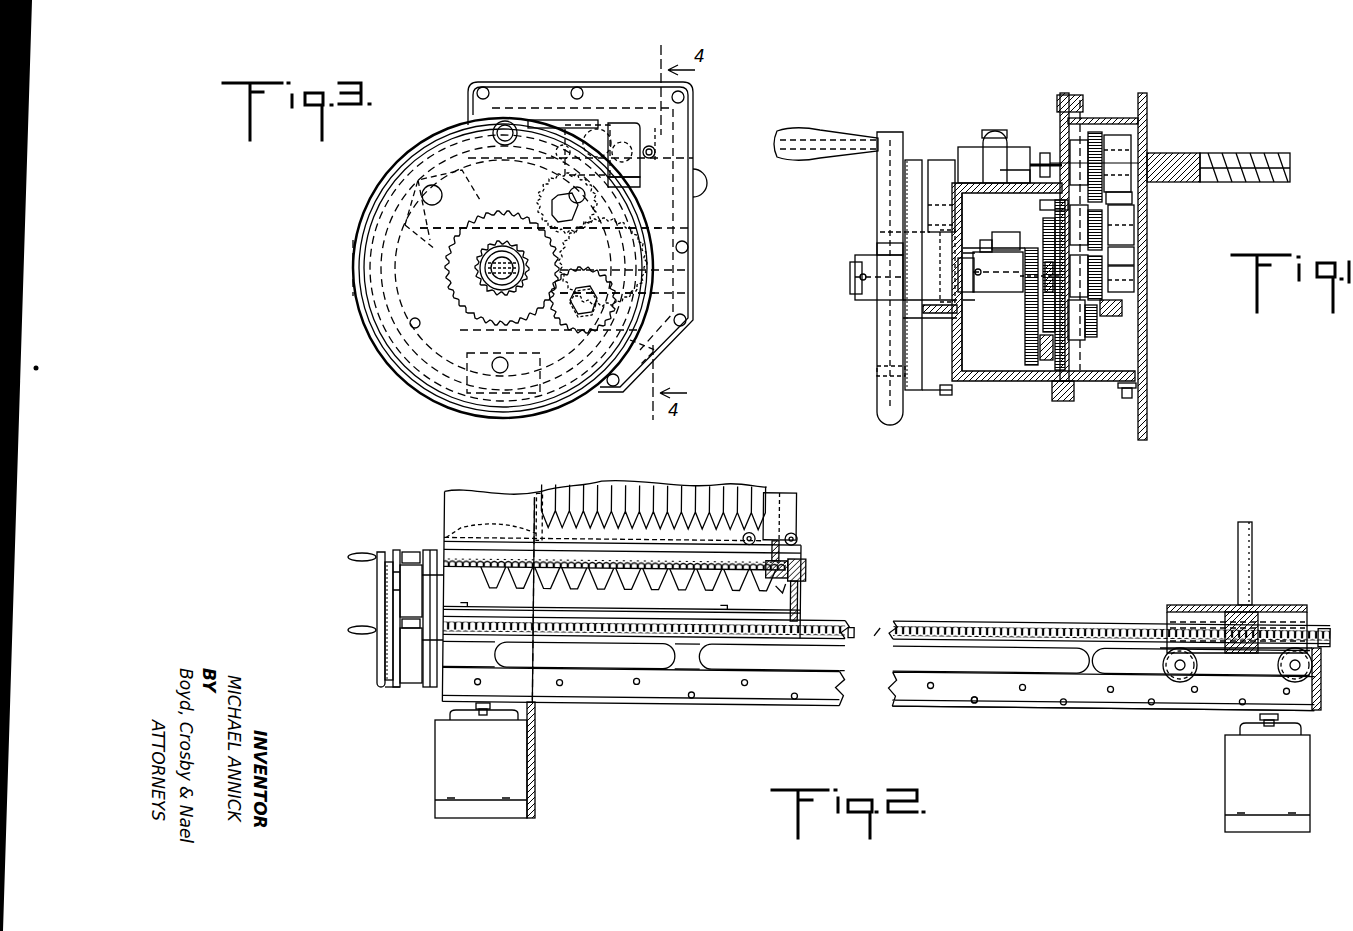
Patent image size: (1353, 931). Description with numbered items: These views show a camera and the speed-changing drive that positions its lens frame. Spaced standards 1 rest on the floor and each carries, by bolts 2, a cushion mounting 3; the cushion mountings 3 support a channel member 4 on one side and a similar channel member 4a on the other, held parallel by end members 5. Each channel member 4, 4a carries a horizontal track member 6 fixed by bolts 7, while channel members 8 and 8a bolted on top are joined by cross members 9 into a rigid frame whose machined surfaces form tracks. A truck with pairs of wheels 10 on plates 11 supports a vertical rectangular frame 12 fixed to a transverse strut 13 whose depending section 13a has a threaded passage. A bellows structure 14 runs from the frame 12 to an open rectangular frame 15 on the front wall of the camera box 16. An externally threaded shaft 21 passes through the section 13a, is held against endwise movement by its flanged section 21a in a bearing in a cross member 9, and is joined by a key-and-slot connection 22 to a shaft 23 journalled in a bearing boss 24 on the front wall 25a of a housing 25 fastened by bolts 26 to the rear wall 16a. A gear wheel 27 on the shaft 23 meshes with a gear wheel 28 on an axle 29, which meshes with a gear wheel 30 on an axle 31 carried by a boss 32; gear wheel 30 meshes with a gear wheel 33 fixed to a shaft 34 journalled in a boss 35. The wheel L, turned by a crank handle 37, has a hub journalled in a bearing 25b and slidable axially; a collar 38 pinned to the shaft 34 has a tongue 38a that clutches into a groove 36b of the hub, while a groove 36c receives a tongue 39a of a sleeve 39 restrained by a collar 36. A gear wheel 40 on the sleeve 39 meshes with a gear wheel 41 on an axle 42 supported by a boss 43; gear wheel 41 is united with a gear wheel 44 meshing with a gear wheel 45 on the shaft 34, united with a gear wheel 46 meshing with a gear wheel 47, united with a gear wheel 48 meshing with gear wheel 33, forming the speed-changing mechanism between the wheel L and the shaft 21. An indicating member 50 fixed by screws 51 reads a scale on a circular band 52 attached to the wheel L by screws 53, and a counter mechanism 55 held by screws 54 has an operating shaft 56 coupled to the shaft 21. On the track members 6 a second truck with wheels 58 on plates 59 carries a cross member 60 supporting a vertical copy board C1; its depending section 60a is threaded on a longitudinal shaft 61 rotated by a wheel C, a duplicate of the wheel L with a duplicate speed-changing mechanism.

In FIG. 2, the standards 1 is at (438, 775).
In FIG. 2, the bolts 2 is at (440, 716).
In FIG. 2, the cushion mounting 3 is at (483, 718).
In FIG. 2, the channel member 4 is at (728, 653).
In FIG. 2, the channel member 4a is at (605, 704).
In FIG. 2, the end members 5 is at (1321, 700).
In FIG. 2, the horizontal track member 6 is at (1100, 706).
In FIG. 2, the bolts 7 is at (975, 695).
In FIG. 2, the channel member 8 is at (625, 546).
In FIG. 2, the channel member 8a is at (714, 538).
In FIG. 2, the cross members 9 is at (800, 604).
In FIG. 2, the wheels 10 is at (795, 543).
In FIG. 2, the plate 11 is at (792, 531).
In FIG. 2, the vertical rectangular frame 12 is at (778, 490).
In FIG. 2, the transverse strut 13 is at (796, 560).
In FIG. 2, the depending section 13a is at (777, 588).
In FIG. 2, the bellows structure 14 is at (700, 484).
In FIG. 2, the open rectangular frame 15 is at (541, 492).
In FIG. 2, the camera box 16 is at (505, 492).
In FIG. 4, the rear wall of camera box 16a is at (1147, 432).
In FIG. 4, the externally threaded shaft 21 is at (1235, 153).
In FIG. 2, the externally threaded shaft 21 is at (442, 565).
In FIG. 2, the flanged section 21a is at (808, 566).
In FIG. 4, the key-and-slot connection 22 is at (1157, 153).
In FIG. 3, the shaft 23 is at (658, 160).
In FIG. 4, the shaft 23 is at (1110, 135).
In FIG. 4, the bearing boss 24 is at (1136, 186).
In FIG. 4, the housing 25 is at (978, 384).
In FIG. 2, the housing 25 is at (392, 690).
In FIG. 4, the front wall of housing 25a is at (1136, 226).
In FIG. 4, the bearing 25b is at (950, 316).
In FIG. 4, the bolts 26 is at (1122, 398).
In FIG. 2, the bolts 26 is at (427, 690).
In FIG. 3, the gear wheel 27 is at (662, 128).
In FIG. 4, the gear wheel 27 is at (1080, 100).
In FIG. 3, the gear wheel 28 is at (608, 120).
In FIG. 3, the axle 29 is at (585, 120).
In FIG. 3, the gear wheel 30 is at (660, 228).
In FIG. 4, the gear wheel 30 is at (1134, 210).
In FIG. 3, the axle 31 is at (615, 180).
In FIG. 4, the axle 31 is at (1068, 228).
In FIG. 4, the boss 32 is at (1120, 246).
In FIG. 4, the gear wheel 33 is at (1124, 258).
In FIG. 3, the shaft 34 is at (496, 282).
In FIG. 4, the shaft 34 is at (850, 276).
In FIG. 3, the boss 35 is at (470, 178).
In FIG. 4, the boss 35 is at (1122, 278).
In FIG. 4, the collar 36 is at (935, 372).
In FIG. 4, the groove 36b is at (886, 235).
In FIG. 4, the groove 36c is at (972, 250).
In FIG. 3, the actuating crank handle 37 is at (498, 127).
In FIG. 4, the actuating crank handle 37 is at (806, 130).
In FIG. 3, the collar 38 is at (486, 262).
In FIG. 4, the collar 38 is at (852, 265).
In FIG. 4, the tongue 38a is at (878, 250).
In FIG. 3, the sleeve 39 is at (298, 116).
In FIG. 4, the sleeve 39 is at (1000, 250).
In FIG. 4, the tongue 39a is at (992, 258).
In FIG. 3, the gear wheel 40 is at (518, 250).
In FIG. 4, the gear wheel 40 is at (1010, 258).
In FIG. 4, the gear wheel 41 is at (1030, 348).
In FIG. 3, the axle 42 is at (655, 296).
In FIG. 4, the axle 42 is at (1125, 302).
In FIG. 4, the boss 43 is at (1100, 322).
In FIG. 3, the gear wheel 44 is at (650, 268).
In FIG. 4, the gear wheel 44 is at (1057, 365).
In FIG. 4, the gear wheel 45 is at (1044, 232).
In FIG. 4, the gear wheel 46 is at (1060, 265).
In FIG. 3, the gear wheel 47 is at (655, 350).
In FIG. 4, the gear wheel 47 is at (1080, 343).
In FIG. 3, the gear wheel 48 is at (570, 312).
In FIG. 4, the gear wheel 48 is at (1097, 338).
In FIG. 4, the indicating member 50 is at (925, 260).
In FIG. 2, the indicating member 50 is at (386, 560).
In FIG. 4, the screws 51 is at (940, 190).
In FIG. 4, the circular band 52 is at (943, 397).
In FIG. 2, the circular band 52 is at (380, 572).
In FIG. 3, the screws 53 is at (500, 372).
In FIG. 4, the screws 53 is at (877, 369).
In FIG. 4, the screws 54 is at (1012, 180).
In FIG. 4, the counter mechanism 55 is at (992, 147).
In FIG. 2, the counter mechanism 55 is at (408, 550).
In FIG. 4, the operating shaft 56 is at (1044, 152).
In FIG. 2, the wheels 58 is at (1278, 668).
In FIG. 2, the plate 59 is at (1168, 612).
In FIG. 2, the cross member 60 is at (1308, 606).
In FIG. 2, the depending section 60a is at (1250, 615).
In FIG. 2, the externally threaded shaft 61 is at (852, 626).
In FIG. 3, the wheel L is at (355, 262).
In FIG. 4, the wheel L is at (880, 398).
In FIG. 2, the wheel L is at (377, 600).
In FIG. 2, the wheel C is at (380, 648).
In FIG. 2, the copy board C1 is at (1238, 530).